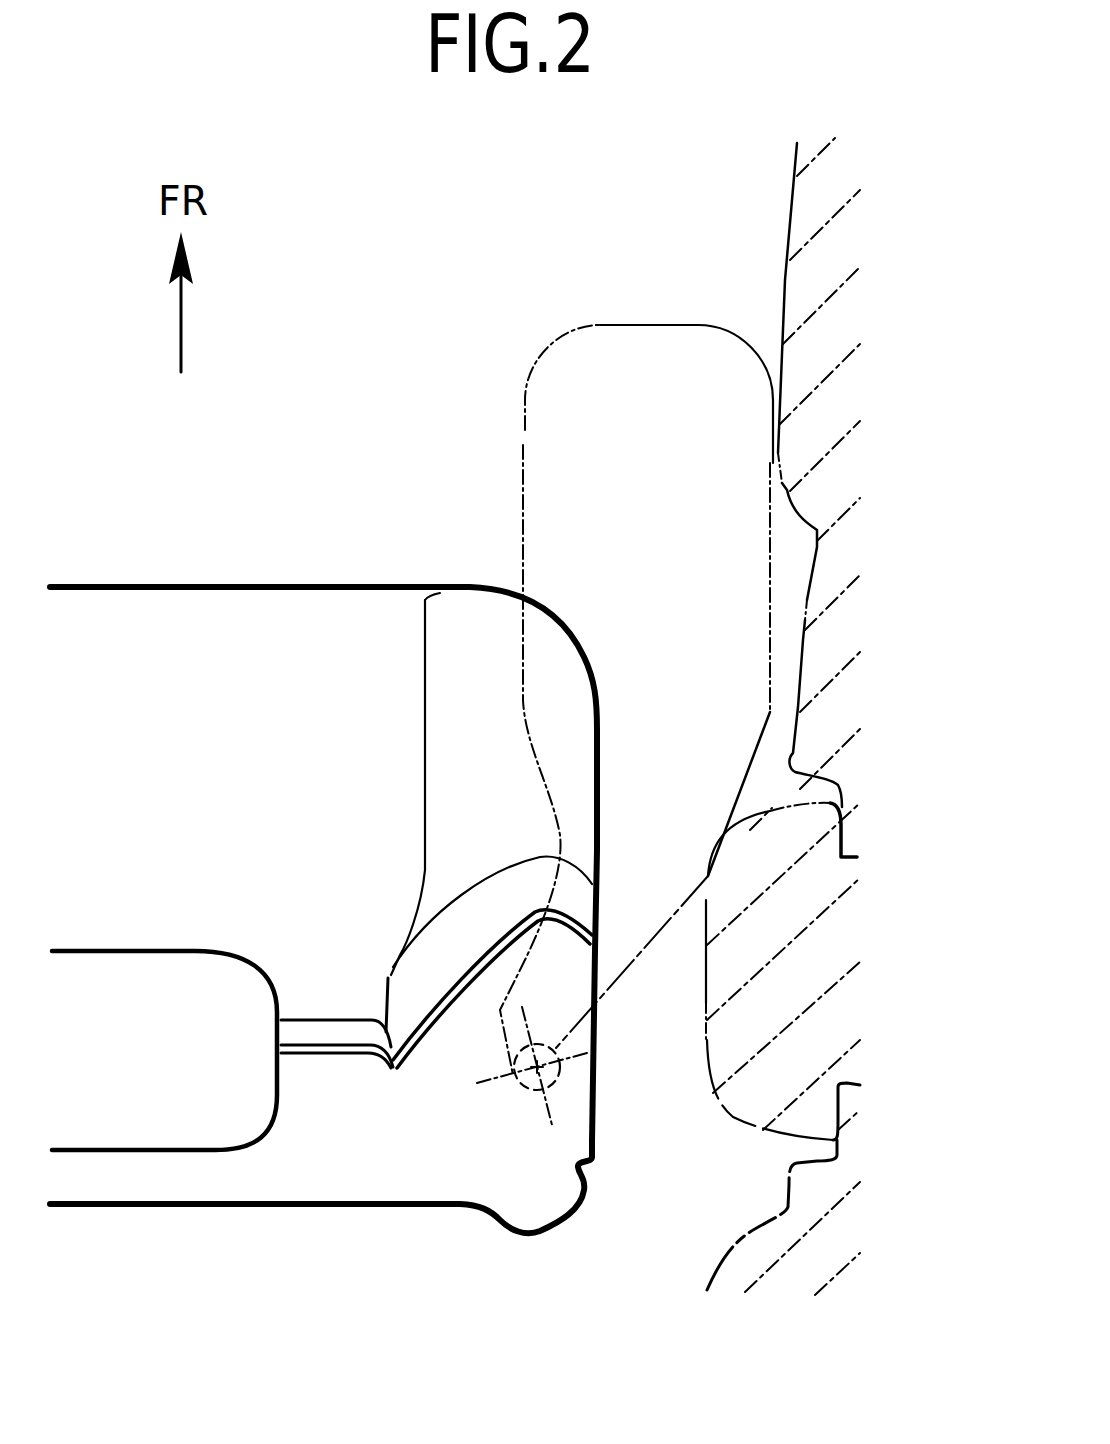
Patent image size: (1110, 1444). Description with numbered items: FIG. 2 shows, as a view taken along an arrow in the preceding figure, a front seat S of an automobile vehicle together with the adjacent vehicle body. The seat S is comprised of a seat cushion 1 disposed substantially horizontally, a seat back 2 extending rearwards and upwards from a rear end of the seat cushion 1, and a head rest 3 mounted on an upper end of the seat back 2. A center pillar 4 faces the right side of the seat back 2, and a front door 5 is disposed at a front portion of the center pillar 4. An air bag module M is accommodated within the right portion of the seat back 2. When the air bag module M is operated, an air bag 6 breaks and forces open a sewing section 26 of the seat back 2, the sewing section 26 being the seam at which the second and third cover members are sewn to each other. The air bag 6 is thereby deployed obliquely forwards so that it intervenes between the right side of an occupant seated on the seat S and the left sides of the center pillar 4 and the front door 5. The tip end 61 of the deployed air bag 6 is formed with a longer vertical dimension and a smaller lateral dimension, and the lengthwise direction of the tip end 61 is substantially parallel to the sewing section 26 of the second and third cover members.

The seat cushion 1 is at (326, 607).
The seat back 2 is at (325, 1173).
The head rest 3 is at (113, 968).
The center pillar 4 is at (708, 1047).
The front door 5 is at (793, 220).
The air bag 6 is at (525, 457).
The tip end of the deployed air bag 61 is at (597, 326).
The sewing section 26 is at (594, 933).
The air bag module M is at (518, 1085).
The front seat S is at (135, 560).